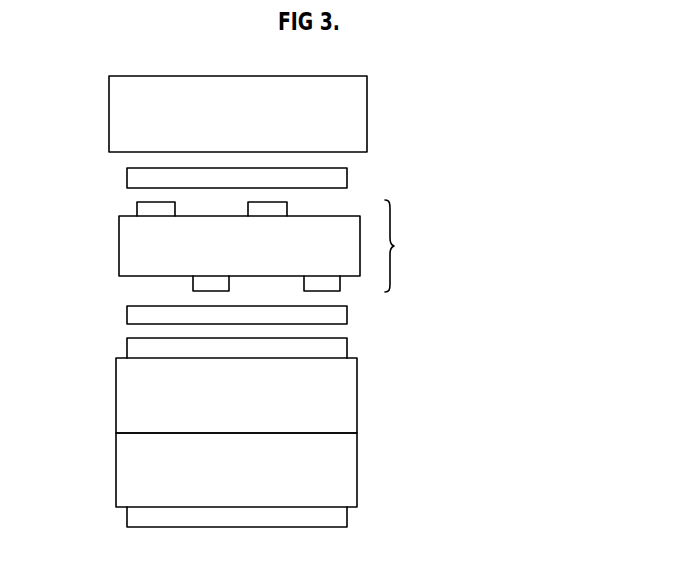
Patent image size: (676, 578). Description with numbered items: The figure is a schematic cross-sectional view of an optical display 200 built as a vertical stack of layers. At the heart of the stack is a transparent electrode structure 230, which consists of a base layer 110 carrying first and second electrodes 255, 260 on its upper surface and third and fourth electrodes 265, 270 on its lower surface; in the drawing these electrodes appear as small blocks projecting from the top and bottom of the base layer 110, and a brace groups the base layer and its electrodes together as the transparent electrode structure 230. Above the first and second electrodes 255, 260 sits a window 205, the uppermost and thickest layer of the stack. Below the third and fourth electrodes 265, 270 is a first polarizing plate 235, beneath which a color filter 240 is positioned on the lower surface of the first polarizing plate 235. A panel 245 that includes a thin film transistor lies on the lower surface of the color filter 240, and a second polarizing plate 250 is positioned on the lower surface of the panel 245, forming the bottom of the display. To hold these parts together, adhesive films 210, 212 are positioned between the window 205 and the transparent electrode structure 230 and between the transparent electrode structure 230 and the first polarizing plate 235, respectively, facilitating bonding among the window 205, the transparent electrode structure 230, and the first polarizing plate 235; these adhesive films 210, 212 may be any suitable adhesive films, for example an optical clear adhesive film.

The optical display 200 is at (468, 142).
The window 205 is at (357, 118).
The adhesive film 210 is at (347, 178).
The first electrode 255 is at (137, 209).
The second electrode 260 is at (287, 208).
The base layer 110 is at (129, 247).
The third electrode 265 is at (193, 283).
The fourth electrode 270 is at (340, 288).
The transparent electrode structure 230 is at (408, 246).
The adhesive film 212 is at (347, 316).
The first polarizing plate 235 is at (347, 350).
The color filter 240 is at (348, 405).
The panel 245 is at (348, 470).
The second polarizing plate 250 is at (347, 520).